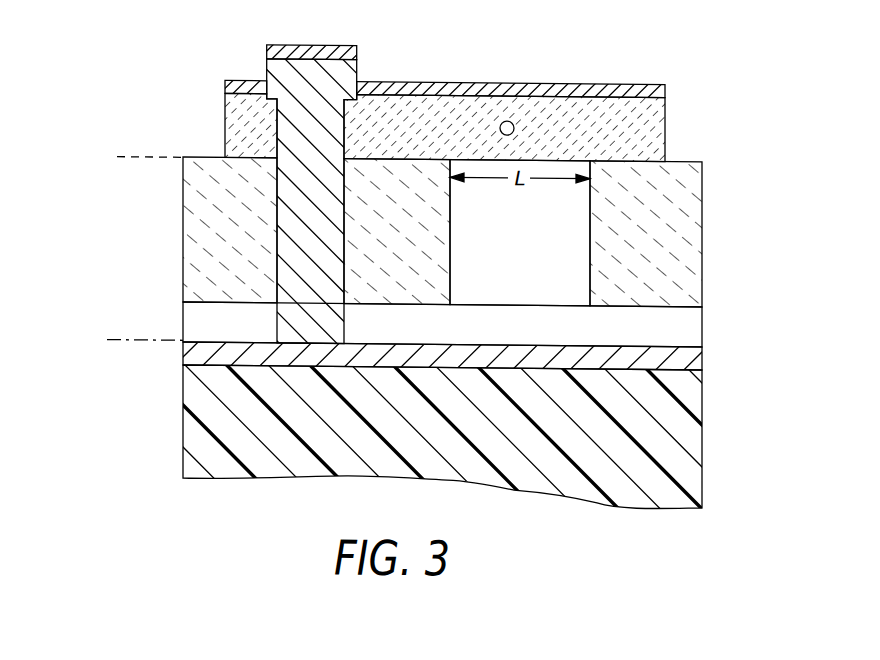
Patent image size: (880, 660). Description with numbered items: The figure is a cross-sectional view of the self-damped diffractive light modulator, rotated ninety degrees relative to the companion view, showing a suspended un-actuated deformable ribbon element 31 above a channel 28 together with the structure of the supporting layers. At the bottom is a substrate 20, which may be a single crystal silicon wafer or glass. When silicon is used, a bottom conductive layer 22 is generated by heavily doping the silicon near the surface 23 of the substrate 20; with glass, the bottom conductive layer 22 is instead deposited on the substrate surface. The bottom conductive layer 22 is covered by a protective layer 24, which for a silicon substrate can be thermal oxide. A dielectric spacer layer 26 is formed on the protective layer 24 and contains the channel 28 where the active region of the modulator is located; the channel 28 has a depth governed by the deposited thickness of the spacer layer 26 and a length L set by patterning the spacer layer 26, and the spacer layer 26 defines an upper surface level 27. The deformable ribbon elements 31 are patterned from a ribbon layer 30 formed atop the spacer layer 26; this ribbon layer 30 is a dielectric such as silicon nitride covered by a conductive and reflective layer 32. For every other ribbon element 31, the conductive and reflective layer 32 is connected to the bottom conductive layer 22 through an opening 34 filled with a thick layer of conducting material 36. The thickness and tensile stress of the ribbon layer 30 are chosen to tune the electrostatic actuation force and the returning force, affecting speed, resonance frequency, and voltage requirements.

The substrate 20 is at (688, 437).
The bottom conductive layer 22 is at (697, 352).
The surface 23 is at (110, 339).
The protective layer 24 is at (690, 320).
The dielectric spacer layer 26 is at (696, 187).
The upper surface level 27 is at (135, 157).
The channel 28 is at (503, 250).
The ribbon layer 30 is at (660, 123).
The deformable ribbon element 31 is at (505, 117).
The conductive and reflective layer 32 is at (635, 83).
The opening 34 is at (273, 141).
The conducting material 36 is at (276, 69).